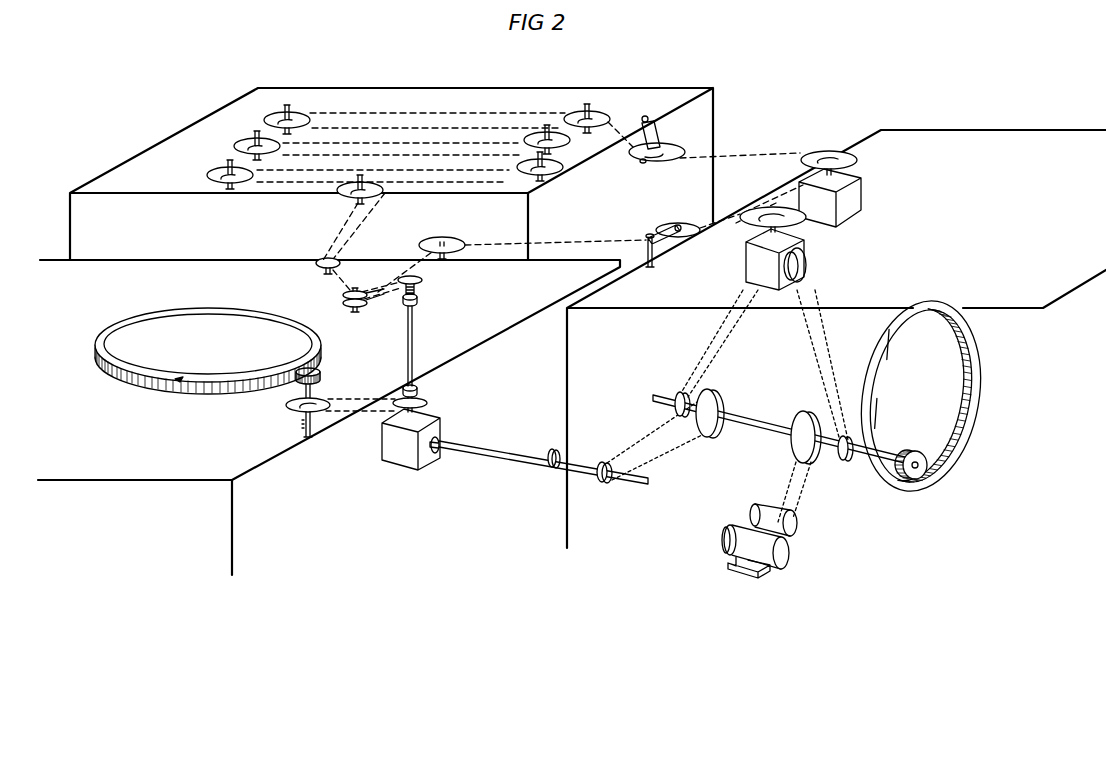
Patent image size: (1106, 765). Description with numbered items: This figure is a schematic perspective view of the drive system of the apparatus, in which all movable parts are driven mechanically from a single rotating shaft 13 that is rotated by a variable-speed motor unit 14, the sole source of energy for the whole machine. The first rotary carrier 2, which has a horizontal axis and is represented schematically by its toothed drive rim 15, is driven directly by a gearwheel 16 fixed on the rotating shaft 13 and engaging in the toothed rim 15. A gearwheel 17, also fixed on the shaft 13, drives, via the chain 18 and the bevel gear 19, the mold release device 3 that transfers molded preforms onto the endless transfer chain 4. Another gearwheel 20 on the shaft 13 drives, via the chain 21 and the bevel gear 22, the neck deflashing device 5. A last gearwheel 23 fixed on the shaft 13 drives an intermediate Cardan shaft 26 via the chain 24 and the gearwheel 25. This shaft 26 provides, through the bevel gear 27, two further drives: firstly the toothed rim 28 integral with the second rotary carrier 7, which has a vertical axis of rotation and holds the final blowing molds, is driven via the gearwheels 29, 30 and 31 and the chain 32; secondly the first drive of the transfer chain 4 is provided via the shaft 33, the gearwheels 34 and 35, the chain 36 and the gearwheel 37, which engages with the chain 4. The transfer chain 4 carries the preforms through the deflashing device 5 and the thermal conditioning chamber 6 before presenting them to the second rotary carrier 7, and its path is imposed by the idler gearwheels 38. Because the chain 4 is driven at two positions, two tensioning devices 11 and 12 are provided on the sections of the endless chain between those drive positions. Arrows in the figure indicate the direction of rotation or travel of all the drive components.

The first rotary carrier 2 is at (923, 395).
The mold release device 3 is at (800, 221).
The endless transfer chain 4 is at (367, 220).
The neck deflashing device 5 is at (848, 160).
The thermal conditioning chamber 6 is at (150, 165).
The second rotary carrier 7 is at (205, 463).
The tensioning device 11 is at (682, 150).
The tensioning device 12 is at (693, 237).
The rotating shaft 13 is at (745, 402).
The variable-speed motor unit 14 is at (758, 555).
The toothed drive rim 15 is at (961, 346).
The gearwheel 16 is at (921, 472).
The gearwheel 17 is at (845, 460).
The chain 18 is at (822, 317).
The bevel gear 19 is at (788, 242).
The gearwheel 20 is at (681, 416).
The chain 21 is at (732, 332).
The bevel gear 22 is at (850, 188).
The gearwheel 23 is at (707, 437).
The chain 24 is at (679, 450).
The gearwheel 25 is at (603, 480).
The intermediate Cardan shaft 26 is at (526, 458).
The bevel gear 27 is at (412, 447).
The toothed rim 28 is at (120, 383).
The gearwheel 29 is at (428, 403).
The gearwheel 30 is at (317, 415).
The gearwheel 31 is at (322, 373).
The chain 32 is at (363, 413).
The shaft 33 is at (414, 347).
The gearwheel 34 is at (418, 282).
The gearwheel 35 is at (357, 291).
The chain 36 is at (391, 293).
The gearwheel 37 is at (352, 305).
The idler gearwheels 38 is at (263, 120).